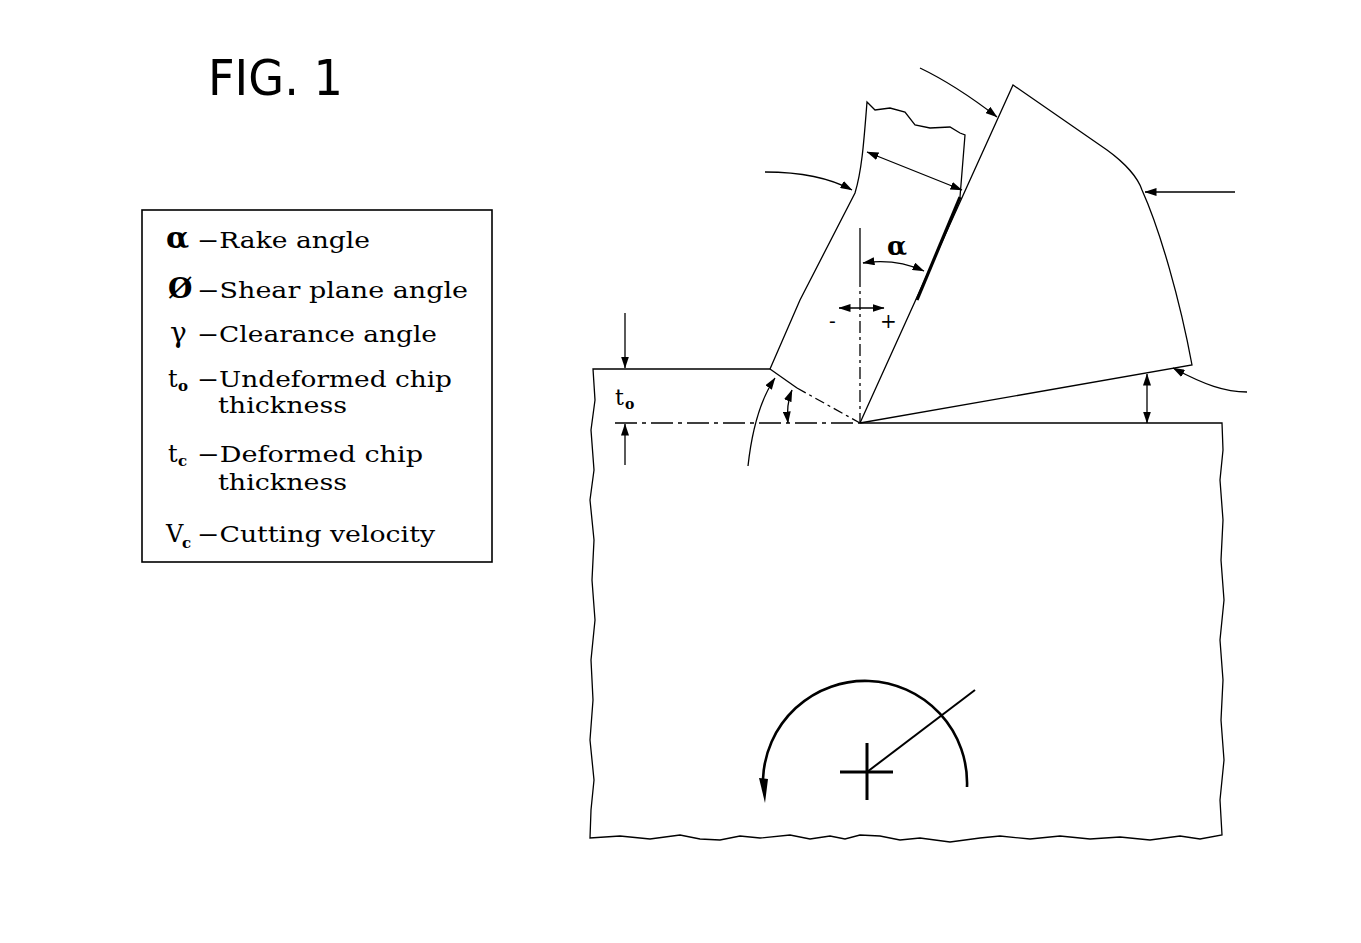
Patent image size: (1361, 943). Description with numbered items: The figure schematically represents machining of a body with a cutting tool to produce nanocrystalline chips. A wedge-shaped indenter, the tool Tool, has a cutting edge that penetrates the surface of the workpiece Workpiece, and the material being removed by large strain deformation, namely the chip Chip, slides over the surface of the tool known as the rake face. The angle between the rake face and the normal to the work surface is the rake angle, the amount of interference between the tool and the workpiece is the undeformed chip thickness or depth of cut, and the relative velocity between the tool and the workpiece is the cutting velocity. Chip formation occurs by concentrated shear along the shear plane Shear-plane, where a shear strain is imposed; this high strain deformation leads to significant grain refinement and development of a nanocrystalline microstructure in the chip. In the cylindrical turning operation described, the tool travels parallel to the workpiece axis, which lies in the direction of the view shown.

The chip Chip is at (825, 235).
The cutting tool Tool is at (1101, 216).
The workpiece Workpiece is at (907, 605).
The shear plane Shear-plane is at (760, 447).